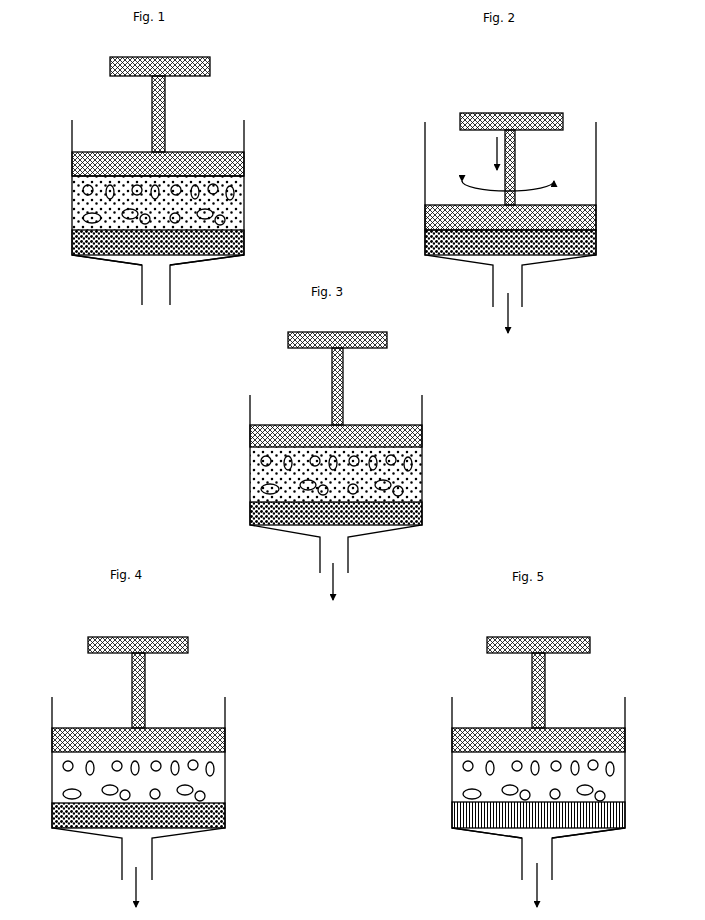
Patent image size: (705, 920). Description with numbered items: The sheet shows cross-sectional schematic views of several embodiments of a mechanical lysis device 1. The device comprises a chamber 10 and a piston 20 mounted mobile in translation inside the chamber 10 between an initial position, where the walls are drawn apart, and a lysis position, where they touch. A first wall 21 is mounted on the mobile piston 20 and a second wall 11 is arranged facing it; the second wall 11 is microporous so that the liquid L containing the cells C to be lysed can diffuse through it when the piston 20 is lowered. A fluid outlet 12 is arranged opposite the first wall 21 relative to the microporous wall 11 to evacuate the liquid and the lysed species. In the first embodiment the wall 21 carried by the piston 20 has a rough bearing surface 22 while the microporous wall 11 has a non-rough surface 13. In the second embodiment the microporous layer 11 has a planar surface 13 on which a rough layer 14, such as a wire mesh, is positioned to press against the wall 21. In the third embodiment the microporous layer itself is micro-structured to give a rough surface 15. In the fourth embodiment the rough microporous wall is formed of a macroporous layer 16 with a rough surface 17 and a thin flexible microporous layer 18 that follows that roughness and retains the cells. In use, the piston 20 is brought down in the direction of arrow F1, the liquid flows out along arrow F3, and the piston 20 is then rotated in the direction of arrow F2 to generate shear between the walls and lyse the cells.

In FIG. 1, the mechanical lysis device 1 is at (80, 106).
In FIG. 1, the chamber 10 is at (249, 142).
In FIG. 1, the second wall 11 is at (225, 238).
In FIG. 3, the second wall 11 is at (412, 512).
In FIG. 4, the second wall 11 is at (212, 813).
In FIG. 5, the second wall 11 is at (455, 822).
In FIG. 1, the fluid outlet 12 is at (155, 308).
In FIG. 1, the non-rough surface 13 is at (70, 220).
In FIG. 3, the rough layer 14 is at (410, 497).
In FIG. 4, the rough surface 15 is at (210, 795).
In FIG. 5, the macroporous layer 16 is at (625, 820).
In FIG. 5, the rough surface 17 is at (612, 800).
In FIG. 5, the microporous layer 18 is at (605, 795).
In FIG. 1, the piston 20 is at (148, 107).
In FIG. 1, the first wall 21 is at (200, 152).
In FIG. 3, the first wall 21 is at (393, 420).
In FIG. 4, the first wall 21 is at (178, 726).
In FIG. 5, the first wall 21 is at (587, 726).
In FIG. 1, the rough bearing surface 22 is at (72, 190).
In FIG. 1, the cells C is at (236, 192).
In FIG. 1, the liquid L is at (237, 218).
In FIG. 2, the arrow F1 is at (495, 145).
In FIG. 2, the arrow F2 is at (560, 182).
In FIG. 2, the arrow F3 is at (520, 317).